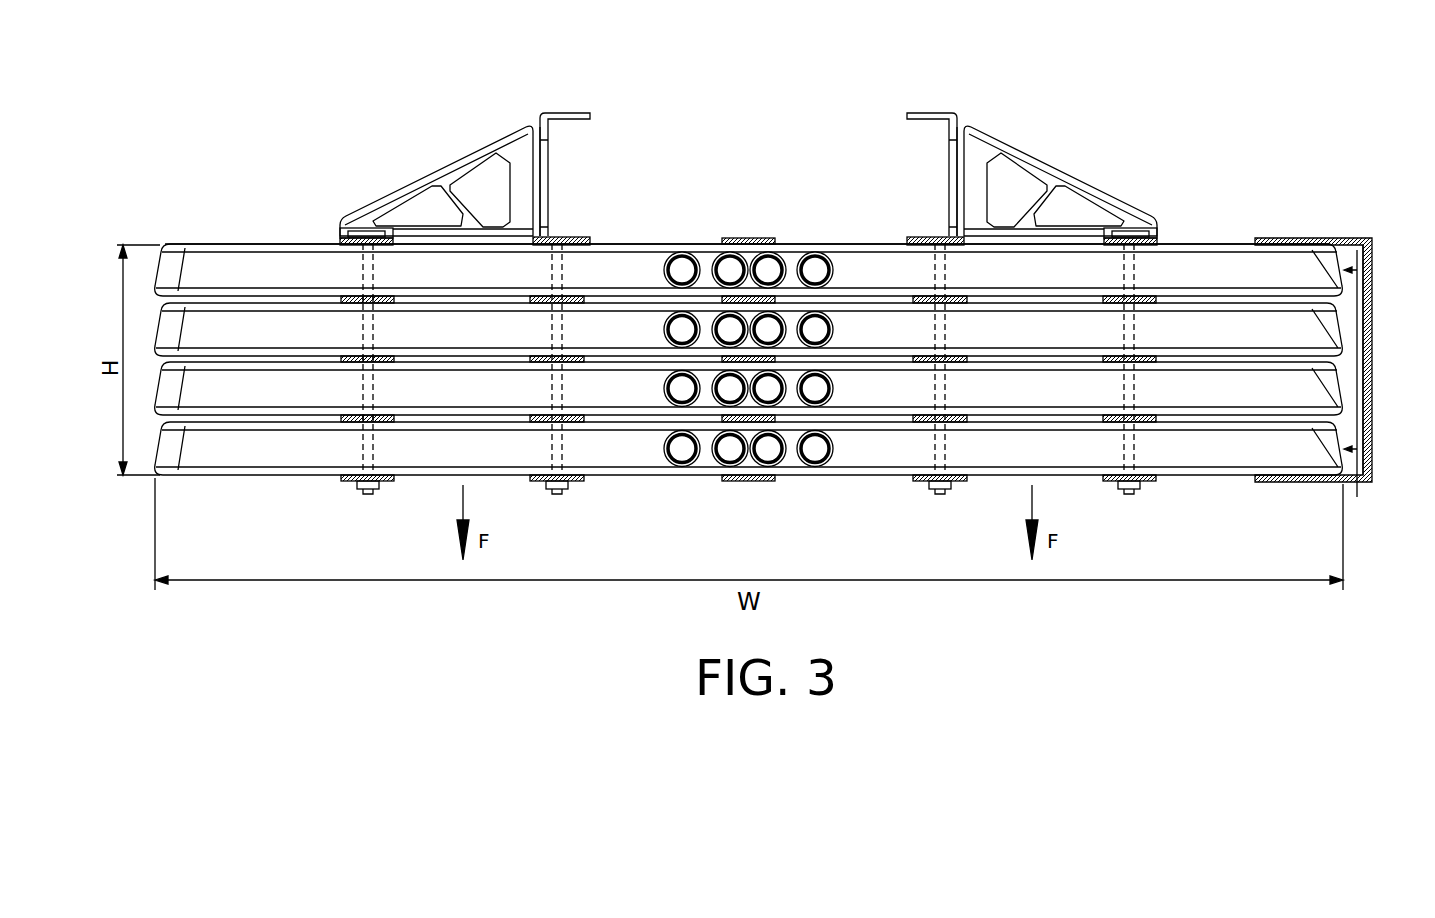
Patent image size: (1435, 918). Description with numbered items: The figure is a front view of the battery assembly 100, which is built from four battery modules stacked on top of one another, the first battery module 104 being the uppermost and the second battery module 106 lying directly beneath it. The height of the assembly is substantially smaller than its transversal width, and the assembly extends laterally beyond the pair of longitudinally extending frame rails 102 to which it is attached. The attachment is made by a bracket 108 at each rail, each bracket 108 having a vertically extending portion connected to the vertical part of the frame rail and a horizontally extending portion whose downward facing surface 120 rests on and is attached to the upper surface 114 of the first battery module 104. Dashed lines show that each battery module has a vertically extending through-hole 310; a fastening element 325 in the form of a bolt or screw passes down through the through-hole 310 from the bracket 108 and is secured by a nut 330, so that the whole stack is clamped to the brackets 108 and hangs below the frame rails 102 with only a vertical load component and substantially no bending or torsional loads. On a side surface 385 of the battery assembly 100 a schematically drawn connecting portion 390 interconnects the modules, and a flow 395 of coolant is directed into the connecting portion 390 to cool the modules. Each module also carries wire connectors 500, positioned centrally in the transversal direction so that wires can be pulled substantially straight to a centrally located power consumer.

The battery assembly 100 is at (410, 158).
The longitudinally extending frame rails 102 is at (568, 112).
The first battery module 104 is at (205, 268).
The second battery module 106 is at (205, 328).
The bracket 108 is at (739, 160).
The upper surface 114 is at (207, 243).
The downward facing surface 120 is at (333, 242).
The through-hole 310 is at (357, 328).
The fastening element 325 is at (344, 500).
The nut 330 is at (352, 484).
The side surface 385 is at (1348, 262).
The connecting portion 390 is at (1330, 244).
The flow of coolant 395 is at (1357, 497).
The wire connectors 500 is at (731, 268).